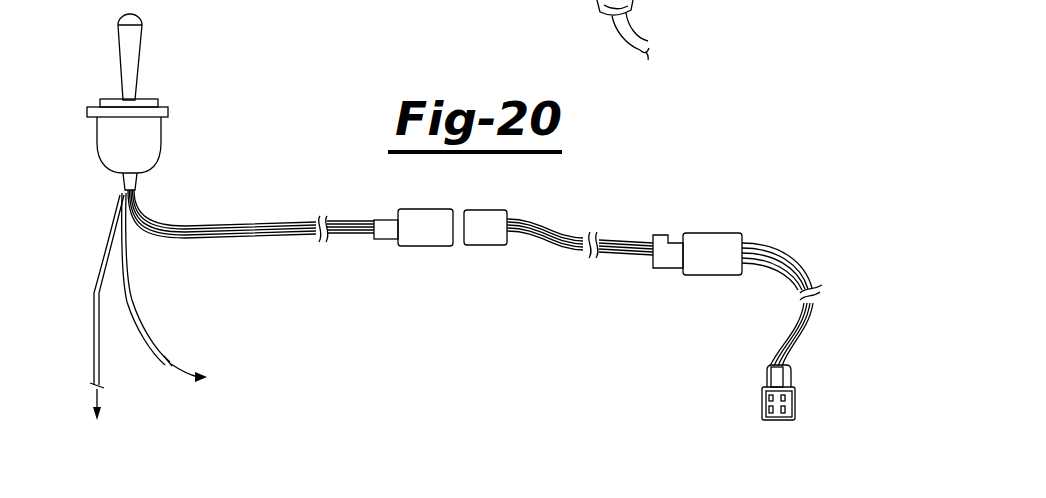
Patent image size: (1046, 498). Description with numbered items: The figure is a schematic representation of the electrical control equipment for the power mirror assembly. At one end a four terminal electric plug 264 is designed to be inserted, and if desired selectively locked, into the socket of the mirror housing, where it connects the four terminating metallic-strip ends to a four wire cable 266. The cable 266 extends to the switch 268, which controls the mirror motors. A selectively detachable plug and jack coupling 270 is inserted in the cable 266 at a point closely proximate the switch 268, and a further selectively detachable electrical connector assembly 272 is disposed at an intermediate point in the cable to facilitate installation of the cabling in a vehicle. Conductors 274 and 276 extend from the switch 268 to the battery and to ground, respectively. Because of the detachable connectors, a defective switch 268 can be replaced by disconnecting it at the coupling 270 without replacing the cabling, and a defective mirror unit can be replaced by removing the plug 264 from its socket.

The four terminal electric plug 264 is at (766, 383).
The four wire cable 266 is at (276, 222).
The switch 268 is at (164, 145).
The plug and jack coupling 270 is at (460, 258).
The selectively detachable electrical connector assembly 272 is at (678, 282).
The conductor 274 is at (97, 299).
The conductor 276 is at (133, 298).